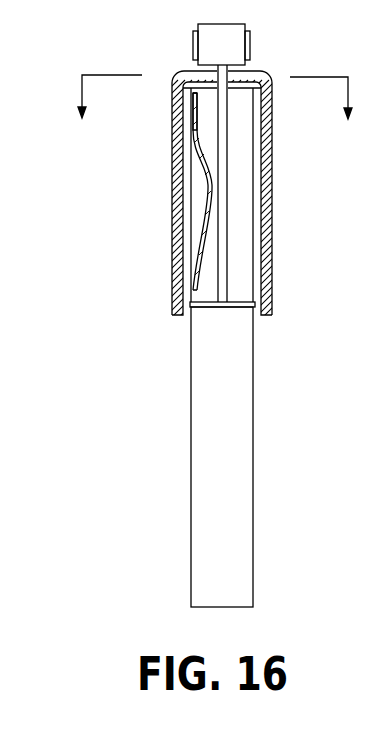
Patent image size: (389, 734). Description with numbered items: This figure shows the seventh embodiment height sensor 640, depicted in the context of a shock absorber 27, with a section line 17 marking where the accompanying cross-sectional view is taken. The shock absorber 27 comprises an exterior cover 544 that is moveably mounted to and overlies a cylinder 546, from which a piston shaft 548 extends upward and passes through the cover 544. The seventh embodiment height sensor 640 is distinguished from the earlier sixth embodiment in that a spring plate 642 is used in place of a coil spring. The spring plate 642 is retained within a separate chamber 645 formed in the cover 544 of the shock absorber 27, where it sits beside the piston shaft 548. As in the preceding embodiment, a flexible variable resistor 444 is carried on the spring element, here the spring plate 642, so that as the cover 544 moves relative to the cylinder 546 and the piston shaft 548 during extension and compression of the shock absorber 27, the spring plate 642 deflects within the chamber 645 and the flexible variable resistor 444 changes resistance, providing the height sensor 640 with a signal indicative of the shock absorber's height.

The section line 17- 17 is at (218, 101).
The shock absorber 27 is at (300, 167).
The flexible variable resistor 444 is at (192, 138).
The exterior cover 544 is at (268, 250).
The cylinder 546 is at (255, 428).
The piston shaft 548 is at (221, 174).
The seventh embodiment height sensor 640 is at (243, 104).
The spring plate 642 is at (173, 86).
The chamber 645 is at (190, 235).